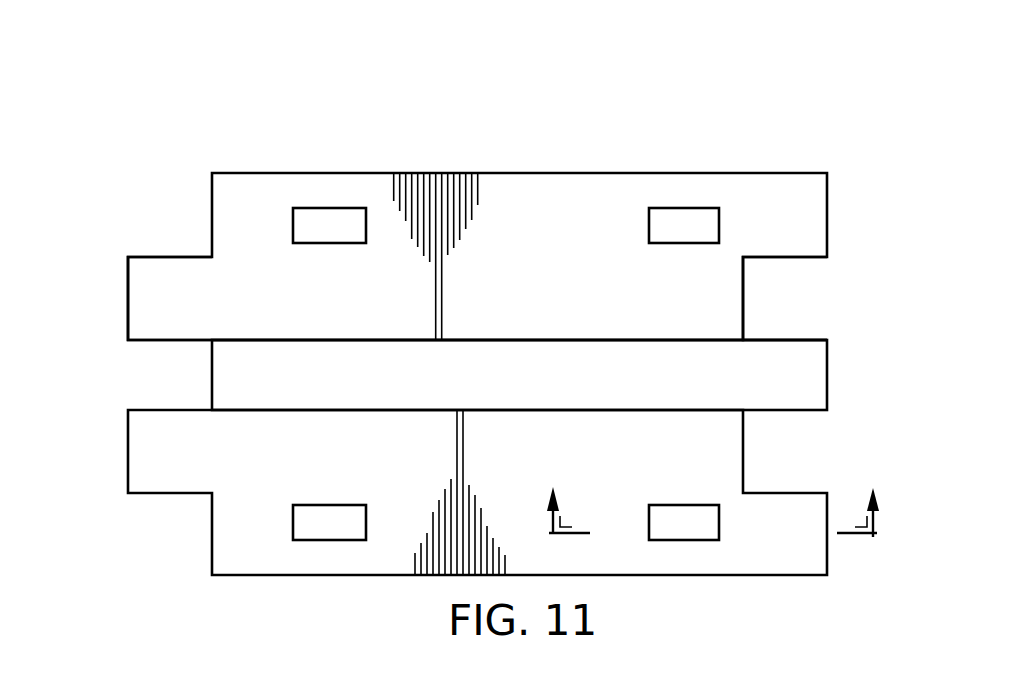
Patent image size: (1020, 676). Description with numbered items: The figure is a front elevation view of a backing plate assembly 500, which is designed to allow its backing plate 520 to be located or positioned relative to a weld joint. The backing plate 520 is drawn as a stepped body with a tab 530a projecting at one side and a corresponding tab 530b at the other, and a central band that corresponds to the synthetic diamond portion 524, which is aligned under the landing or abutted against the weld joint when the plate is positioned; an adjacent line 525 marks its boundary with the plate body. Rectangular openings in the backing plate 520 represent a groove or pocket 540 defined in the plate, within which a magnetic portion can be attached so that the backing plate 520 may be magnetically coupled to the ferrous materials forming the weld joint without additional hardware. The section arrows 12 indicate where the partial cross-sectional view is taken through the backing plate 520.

The backing plate assembly 500 is at (699, 67).
The backing plate 520 is at (585, 172).
The synthetic diamond portion 524 is at (650, 348).
The interface line 525 is at (550, 338).
The left tab 530a is at (128, 297).
The right tab 530b is at (745, 297).
The groove or pocket 540 is at (682, 515).
The section line 12 is at (719, 496).